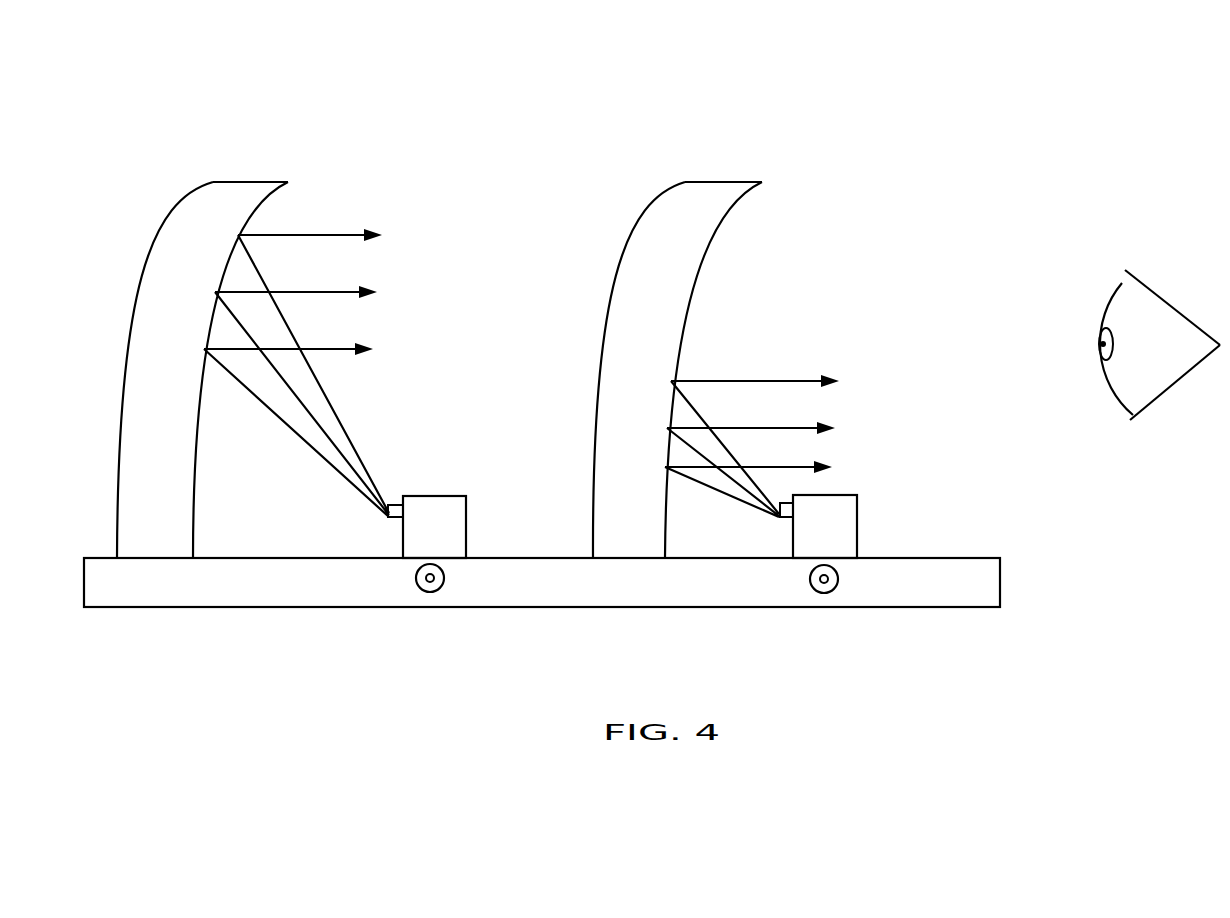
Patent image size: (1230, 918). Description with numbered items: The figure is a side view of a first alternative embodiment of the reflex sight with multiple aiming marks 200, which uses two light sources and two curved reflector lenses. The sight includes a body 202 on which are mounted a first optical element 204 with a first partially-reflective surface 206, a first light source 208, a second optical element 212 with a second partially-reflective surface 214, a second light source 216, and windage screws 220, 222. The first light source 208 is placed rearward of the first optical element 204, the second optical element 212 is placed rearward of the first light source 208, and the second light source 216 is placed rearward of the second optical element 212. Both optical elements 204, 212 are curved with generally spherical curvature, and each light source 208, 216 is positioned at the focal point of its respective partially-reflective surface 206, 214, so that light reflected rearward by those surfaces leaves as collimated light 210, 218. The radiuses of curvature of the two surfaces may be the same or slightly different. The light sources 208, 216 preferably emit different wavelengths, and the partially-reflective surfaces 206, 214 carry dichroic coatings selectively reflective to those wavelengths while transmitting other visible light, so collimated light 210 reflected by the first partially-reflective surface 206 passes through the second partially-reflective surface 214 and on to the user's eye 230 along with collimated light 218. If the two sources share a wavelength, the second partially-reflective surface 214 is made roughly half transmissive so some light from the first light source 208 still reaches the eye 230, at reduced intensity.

The reflex sight with multiple aiming marks 200 is at (872, 87).
The body 202 is at (521, 558).
The first optical element 204 is at (202, 342).
The first partially-reflective surface 206 is at (194, 439).
The first light source 208 is at (447, 496).
The collimated light 210 is at (328, 232).
The second optical element 212 is at (685, 340).
The second partially-reflective surface 214 is at (698, 265).
The second light source 216 is at (848, 493).
The collimated light 218 is at (773, 381).
The windage screw 220 is at (446, 575).
The windage screw 222 is at (840, 577).
The user's eye 230 is at (1150, 287).